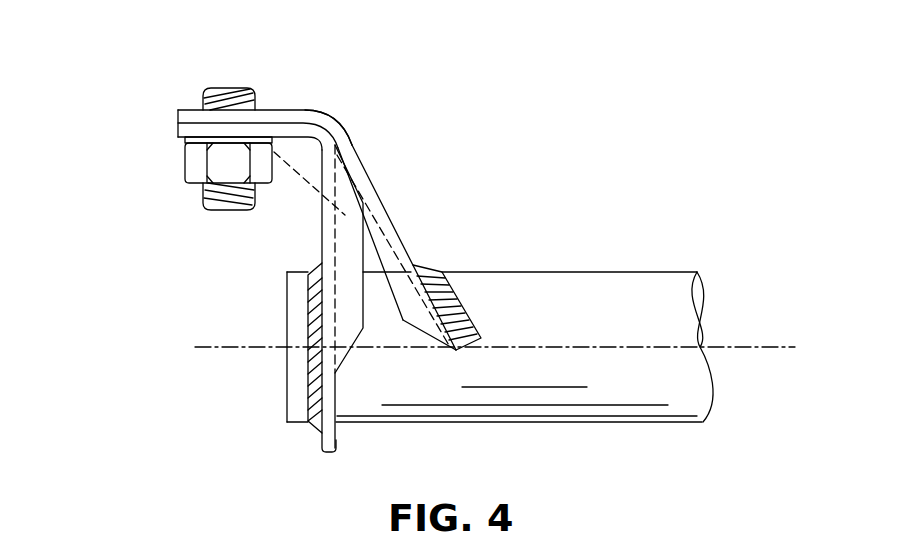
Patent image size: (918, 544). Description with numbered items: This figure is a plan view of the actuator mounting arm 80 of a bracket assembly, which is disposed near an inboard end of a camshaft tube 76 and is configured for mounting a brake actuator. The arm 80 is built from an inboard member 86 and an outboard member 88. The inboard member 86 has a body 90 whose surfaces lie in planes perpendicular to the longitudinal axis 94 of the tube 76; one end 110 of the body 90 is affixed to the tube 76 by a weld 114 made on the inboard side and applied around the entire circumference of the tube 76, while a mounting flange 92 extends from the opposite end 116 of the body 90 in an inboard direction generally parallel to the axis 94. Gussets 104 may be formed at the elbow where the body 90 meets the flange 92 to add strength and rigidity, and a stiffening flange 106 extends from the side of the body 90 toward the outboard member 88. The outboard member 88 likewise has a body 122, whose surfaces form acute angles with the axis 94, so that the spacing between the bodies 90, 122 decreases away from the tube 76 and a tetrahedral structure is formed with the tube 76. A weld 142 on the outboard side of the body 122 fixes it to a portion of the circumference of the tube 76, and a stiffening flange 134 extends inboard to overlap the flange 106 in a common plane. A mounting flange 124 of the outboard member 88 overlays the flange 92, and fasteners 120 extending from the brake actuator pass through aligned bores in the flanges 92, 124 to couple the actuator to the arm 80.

The actuator mounting arm 80 is at (378, 116).
The outboard member 88 is at (423, 208).
The gussets 104 is at (297, 150).
The mounting flange 124 is at (183, 118).
The mounting flange 92 is at (183, 128).
The body 122 is at (383, 187).
The stiffening flange 134 is at (385, 262).
The weld 142 is at (468, 302).
The body 90 is at (296, 248).
The inboard member 86 is at (316, 270).
The stiffening flange 106 is at (318, 302).
The weld 114 is at (308, 403).
The end of body 110 is at (315, 442).
The fasteners 120 is at (201, 102).
The opposite end of body 116 is at (310, 158).
The camshaft tube 76 is at (637, 395).
The longitudinal axis 94 is at (782, 349).